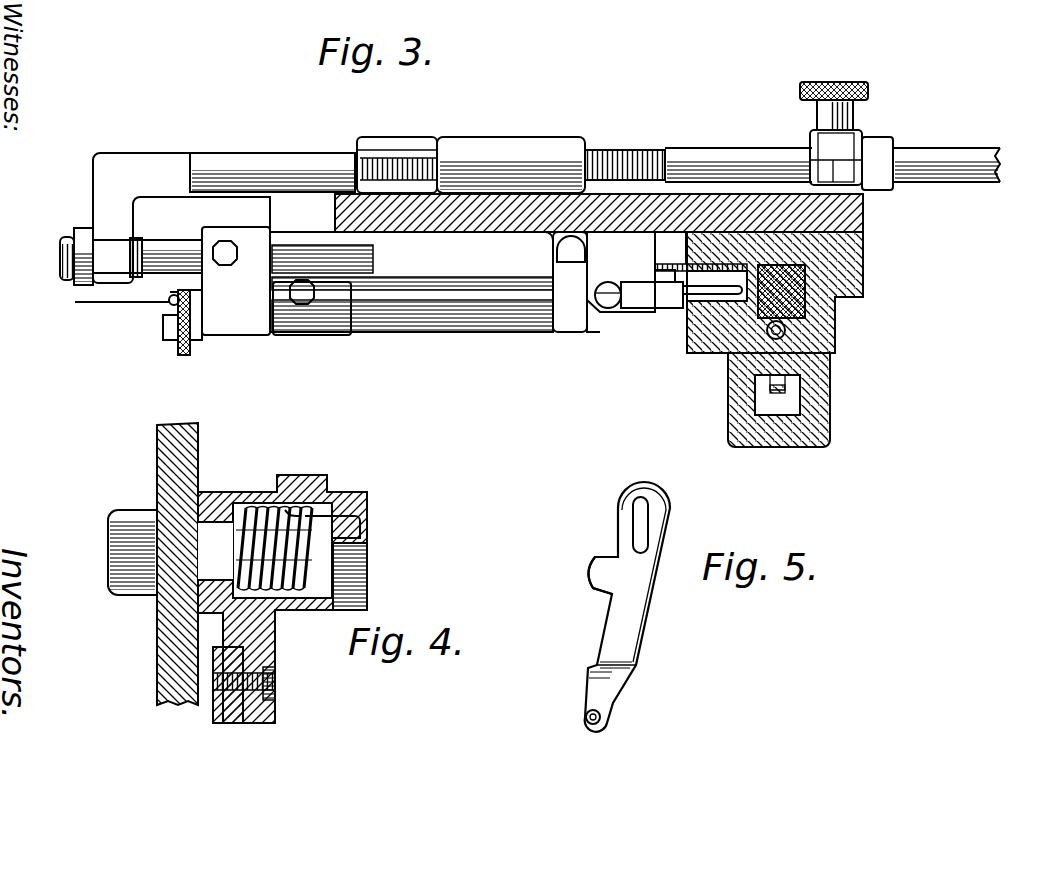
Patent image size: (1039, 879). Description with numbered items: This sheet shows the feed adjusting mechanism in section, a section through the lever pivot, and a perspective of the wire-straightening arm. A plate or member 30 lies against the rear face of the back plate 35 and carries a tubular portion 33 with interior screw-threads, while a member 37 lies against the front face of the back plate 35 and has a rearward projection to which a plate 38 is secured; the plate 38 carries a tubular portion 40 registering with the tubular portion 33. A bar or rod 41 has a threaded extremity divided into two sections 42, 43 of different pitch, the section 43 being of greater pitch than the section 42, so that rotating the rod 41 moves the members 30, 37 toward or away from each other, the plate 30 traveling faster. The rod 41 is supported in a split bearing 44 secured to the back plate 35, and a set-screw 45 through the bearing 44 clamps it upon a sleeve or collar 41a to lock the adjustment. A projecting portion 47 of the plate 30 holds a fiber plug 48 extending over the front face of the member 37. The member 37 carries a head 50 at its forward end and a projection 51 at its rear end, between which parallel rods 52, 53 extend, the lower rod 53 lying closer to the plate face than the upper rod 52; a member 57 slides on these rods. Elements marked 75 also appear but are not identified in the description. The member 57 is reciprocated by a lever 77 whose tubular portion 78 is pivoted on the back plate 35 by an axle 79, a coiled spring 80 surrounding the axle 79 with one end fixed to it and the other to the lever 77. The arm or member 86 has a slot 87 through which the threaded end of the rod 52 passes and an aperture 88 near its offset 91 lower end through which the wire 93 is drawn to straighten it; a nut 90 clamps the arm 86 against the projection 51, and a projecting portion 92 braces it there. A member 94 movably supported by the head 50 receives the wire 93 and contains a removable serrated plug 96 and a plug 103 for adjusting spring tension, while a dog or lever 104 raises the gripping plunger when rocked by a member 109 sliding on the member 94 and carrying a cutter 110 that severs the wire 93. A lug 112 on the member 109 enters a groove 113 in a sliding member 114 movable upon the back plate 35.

In FIG. 3, the plate or member 30 is at (166, 166).
In FIG. 3, the tubular portion 33 is at (248, 166).
In FIG. 3, the back plate 35 is at (362, 208).
In FIG. 4, the back plate 35 is at (166, 458).
In FIG. 3, the member 37 is at (476, 236).
In FIG. 3, the plate 38 is at (420, 146).
In FIG. 3, the tubular portion 40 is at (543, 145).
In FIG. 3, the bar or rod 41 is at (738, 160).
In FIG. 3, the sleeve or collar 41a is at (972, 172).
In FIG. 3, the threaded section 42 is at (630, 160).
In FIG. 3, the threaded section 43 is at (380, 162).
In FIG. 3, the bearing 44 is at (856, 150).
In FIG. 3, the set-screw 45 is at (850, 84).
In FIG. 3, the projecting portion 47 is at (108, 222).
In FIG. 3, the plug 48 is at (172, 268).
In FIG. 3, the head 50 is at (580, 320).
In FIG. 3, the projection 51 is at (252, 318).
In FIG. 3, the upper rod 52 is at (506, 322).
In FIG. 3, the lower rod 53 is at (495, 280).
In FIG. 3, the member 57 is at (330, 322).
In FIG. 3, the nut 75 is at (230, 258).
In FIG. 4, the lever 77 is at (264, 636).
In FIG. 4, the tubular portion 78 is at (266, 510).
In FIG. 4, the axle 79 is at (215, 545).
In FIG. 4, the coiled spring 80 is at (320, 556).
In FIG. 3, the arm or member 86 is at (197, 340).
In FIG. 5, the arm or member 86 is at (615, 618).
In FIG. 5, the slot 87 is at (645, 527).
In FIG. 3, the aperture 88 is at (170, 302).
In FIG. 5, the aperture 88 is at (586, 718).
In FIG. 3, the nut 90 is at (184, 355).
In FIG. 3, the offset 91 is at (190, 292).
In FIG. 5, the offset 91 is at (600, 680).
In FIG. 5, the projecting portion 92 is at (592, 568).
In FIG. 3, the wire 93 is at (110, 302).
In FIG. 3, the member 94 is at (606, 258).
In FIG. 3, the removable member or plug 96 is at (795, 312).
In FIG. 3, the plug 103 is at (611, 290).
In FIG. 3, the dog or lever 104 is at (610, 314).
In FIG. 3, the member 109 is at (657, 306).
In FIG. 3, the cutter 110 is at (678, 308).
In FIG. 3, the lug 112 is at (682, 262).
In FIG. 3, the groove 113 is at (700, 280).
In FIG. 3, the sliding member 114 is at (690, 271).